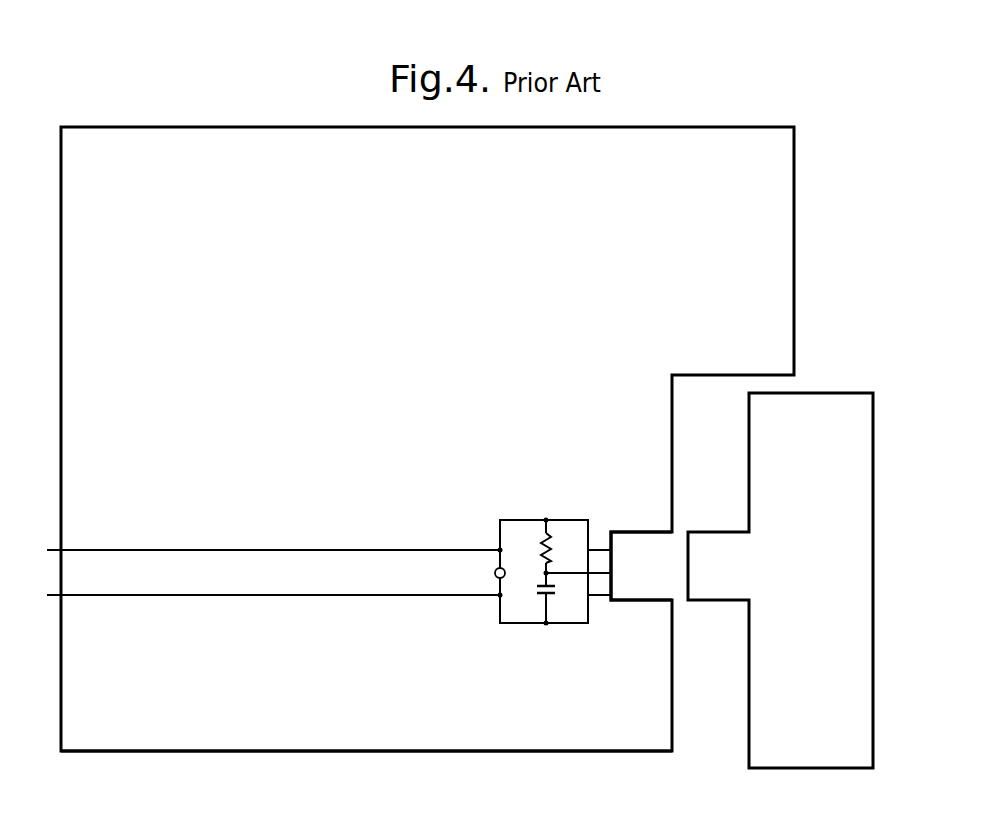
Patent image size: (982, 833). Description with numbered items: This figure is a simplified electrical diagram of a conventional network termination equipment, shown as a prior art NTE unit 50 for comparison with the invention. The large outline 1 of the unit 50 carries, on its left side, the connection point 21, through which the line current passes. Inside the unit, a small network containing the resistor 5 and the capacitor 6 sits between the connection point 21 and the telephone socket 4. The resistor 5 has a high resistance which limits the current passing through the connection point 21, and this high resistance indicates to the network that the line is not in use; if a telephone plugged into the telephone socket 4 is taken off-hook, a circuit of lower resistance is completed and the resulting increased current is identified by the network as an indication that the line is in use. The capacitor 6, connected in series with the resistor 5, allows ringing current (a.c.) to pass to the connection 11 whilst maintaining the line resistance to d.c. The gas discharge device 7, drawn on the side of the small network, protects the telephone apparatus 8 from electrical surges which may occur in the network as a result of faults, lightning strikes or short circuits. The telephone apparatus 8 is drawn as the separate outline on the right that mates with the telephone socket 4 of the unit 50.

The ground conductor plate 1 is at (366, 767).
The telephone socket 4 is at (641, 566).
The resistor 5 is at (555, 558).
The capacitor 6 is at (544, 639).
The gas discharge device 7 is at (491, 576).
The telephone apparatus 8 is at (780, 580).
The connection 11 is at (585, 574).
The connection point 21 is at (61, 577).
The NTE unit 50 is at (794, 198).